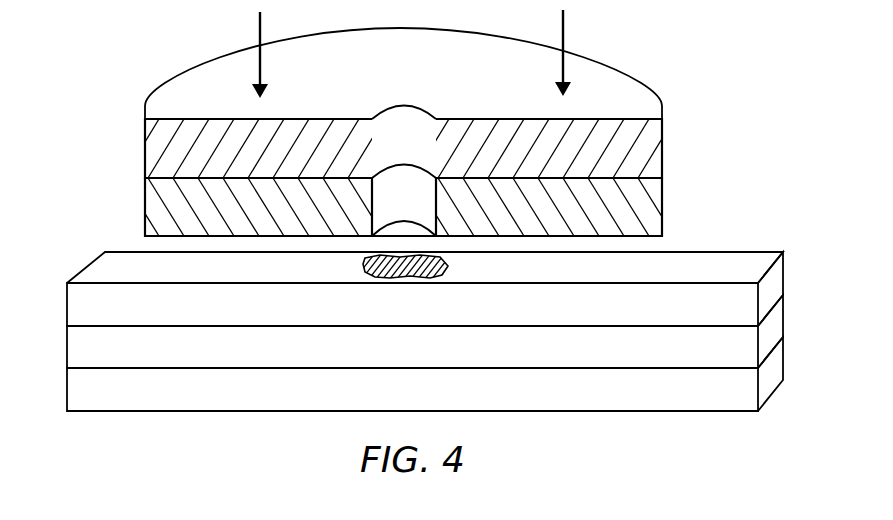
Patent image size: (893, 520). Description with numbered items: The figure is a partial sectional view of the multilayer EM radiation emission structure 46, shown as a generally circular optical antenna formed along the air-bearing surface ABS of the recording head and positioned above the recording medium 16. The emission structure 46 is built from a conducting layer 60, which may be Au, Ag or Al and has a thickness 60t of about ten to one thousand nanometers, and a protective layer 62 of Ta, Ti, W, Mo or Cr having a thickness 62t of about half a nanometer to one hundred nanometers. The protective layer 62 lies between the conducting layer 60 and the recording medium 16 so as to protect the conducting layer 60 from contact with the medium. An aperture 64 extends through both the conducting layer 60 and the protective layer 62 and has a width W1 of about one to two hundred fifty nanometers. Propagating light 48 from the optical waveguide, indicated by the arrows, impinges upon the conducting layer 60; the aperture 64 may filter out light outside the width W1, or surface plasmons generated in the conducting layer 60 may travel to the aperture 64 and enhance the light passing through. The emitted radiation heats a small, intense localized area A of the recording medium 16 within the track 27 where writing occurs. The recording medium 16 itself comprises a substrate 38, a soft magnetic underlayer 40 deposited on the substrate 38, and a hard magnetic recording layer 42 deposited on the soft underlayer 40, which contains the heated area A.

The recording medium 16 is at (412, 305).
The track 27 is at (743, 260).
The substrate 38 is at (73, 395).
The soft magnetic underlayer 40 is at (75, 353).
The hard magnetic recording layer 42 is at (73, 311).
The multilayer EM radiation emission structure 46 is at (666, 120).
The propagating light 48 is at (257, 24).
The conducting layer 60 is at (150, 153).
The protective layer 62 is at (152, 211).
The aperture 64 is at (413, 146).
The thickness of conducting layer 60t is at (225, 119).
The thickness of protective layer 62t is at (274, 178).
The aperture width W1 is at (435, 118).
The localized area A is at (447, 268).
The air-bearing surface ABS is at (645, 236).